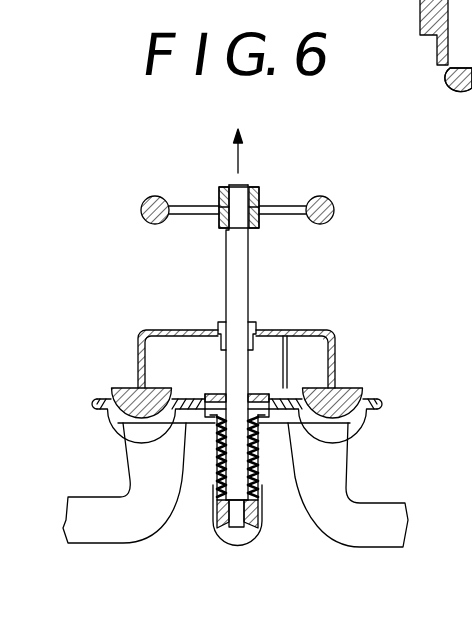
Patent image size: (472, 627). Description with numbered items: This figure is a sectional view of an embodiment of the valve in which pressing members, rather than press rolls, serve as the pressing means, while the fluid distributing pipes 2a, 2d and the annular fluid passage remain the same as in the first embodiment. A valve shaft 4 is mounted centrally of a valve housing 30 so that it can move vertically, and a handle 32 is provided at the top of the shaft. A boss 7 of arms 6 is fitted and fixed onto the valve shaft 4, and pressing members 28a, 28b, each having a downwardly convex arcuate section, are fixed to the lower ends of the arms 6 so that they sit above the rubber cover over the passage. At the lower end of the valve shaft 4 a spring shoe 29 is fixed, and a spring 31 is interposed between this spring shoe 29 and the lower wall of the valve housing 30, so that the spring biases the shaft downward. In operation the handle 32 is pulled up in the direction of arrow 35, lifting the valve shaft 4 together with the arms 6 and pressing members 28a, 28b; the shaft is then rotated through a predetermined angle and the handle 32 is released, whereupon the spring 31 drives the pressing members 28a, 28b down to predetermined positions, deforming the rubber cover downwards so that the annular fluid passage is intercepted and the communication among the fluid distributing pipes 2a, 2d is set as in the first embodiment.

The arrow 35 is at (242, 162).
The handle 32 is at (257, 207).
The valve shaft 4 is at (240, 278).
The boss 7 is at (218, 322).
The arms 6 is at (332, 335).
The pressing member 28b is at (120, 390).
The pressing member 28a is at (352, 392).
The fluid distributing pipe 2a is at (98, 503).
The fluid distributing pipe 2d is at (367, 508).
The spring 31 is at (258, 462).
The valve housing 30 is at (203, 420).
The spring shoe 29 is at (262, 522).